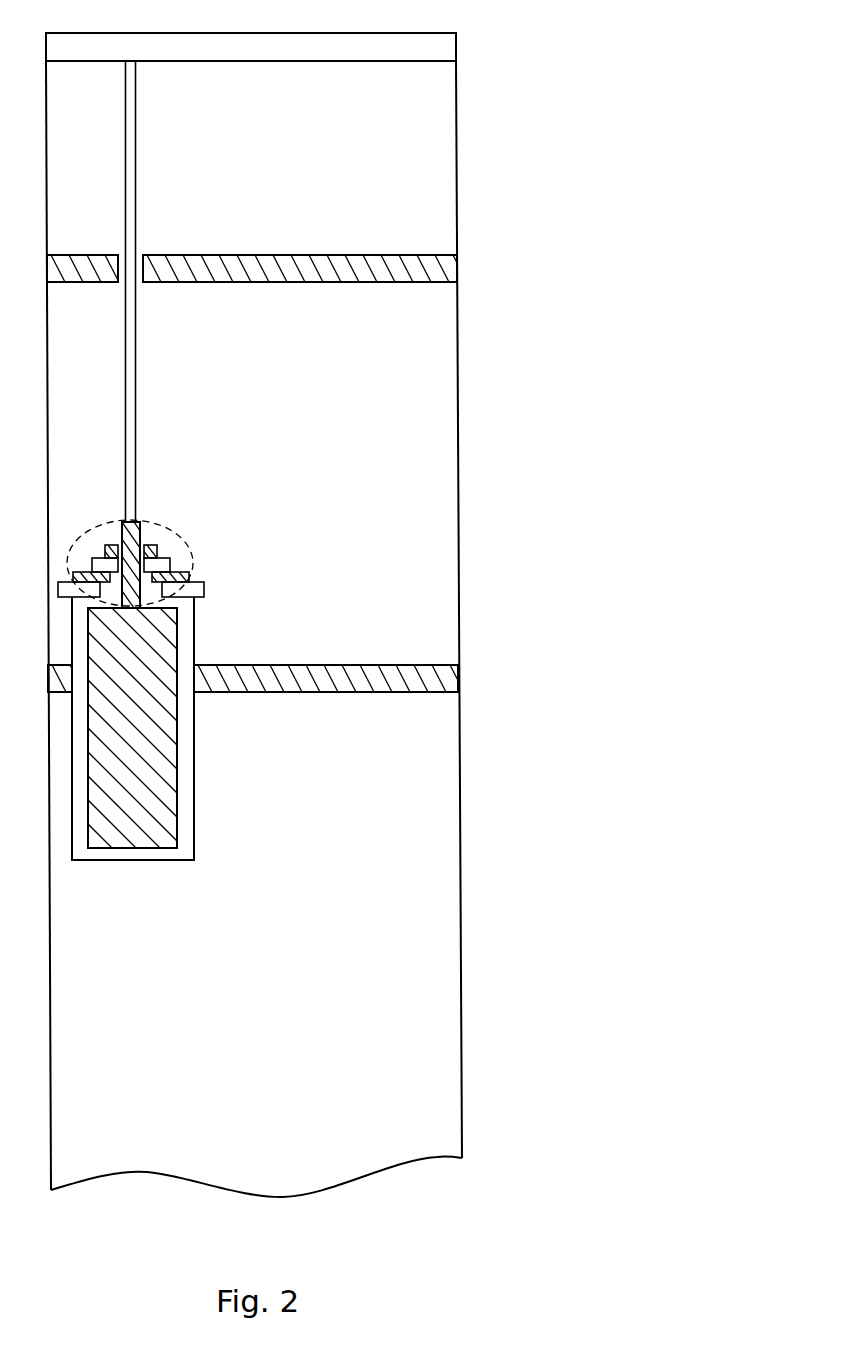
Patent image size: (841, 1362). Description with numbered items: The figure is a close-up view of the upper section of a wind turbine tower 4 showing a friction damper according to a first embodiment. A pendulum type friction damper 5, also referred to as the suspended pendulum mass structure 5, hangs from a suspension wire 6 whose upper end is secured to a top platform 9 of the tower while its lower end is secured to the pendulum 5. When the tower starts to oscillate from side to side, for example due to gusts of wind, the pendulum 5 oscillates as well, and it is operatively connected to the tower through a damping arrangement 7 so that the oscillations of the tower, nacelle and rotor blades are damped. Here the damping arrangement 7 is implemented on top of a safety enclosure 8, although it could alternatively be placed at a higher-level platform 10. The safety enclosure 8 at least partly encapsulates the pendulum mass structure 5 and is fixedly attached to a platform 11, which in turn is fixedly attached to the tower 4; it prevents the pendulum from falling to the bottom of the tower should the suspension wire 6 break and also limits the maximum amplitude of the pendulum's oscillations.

The wind turbine tower 4 is at (457, 413).
The pendulum type friction damper 5 is at (168, 770).
The suspension wire 6 is at (132, 408).
The damping arrangement 7 is at (188, 542).
The safety enclosure 8 is at (197, 829).
The top platform 9 is at (441, 49).
The platform 10 is at (237, 263).
The platform 11 is at (286, 677).